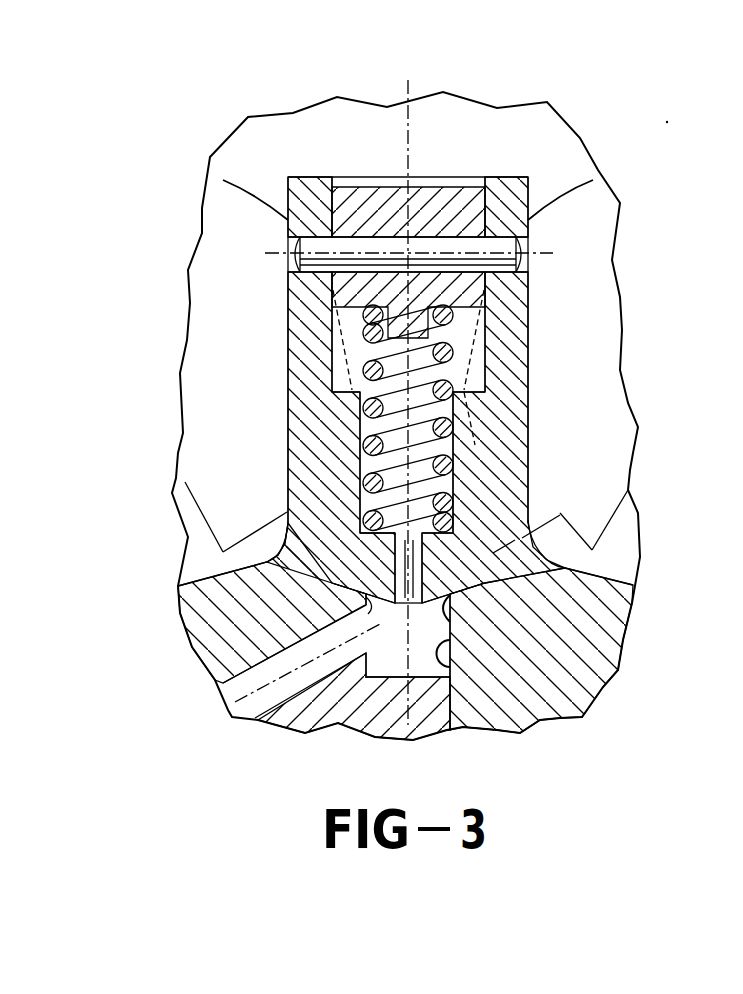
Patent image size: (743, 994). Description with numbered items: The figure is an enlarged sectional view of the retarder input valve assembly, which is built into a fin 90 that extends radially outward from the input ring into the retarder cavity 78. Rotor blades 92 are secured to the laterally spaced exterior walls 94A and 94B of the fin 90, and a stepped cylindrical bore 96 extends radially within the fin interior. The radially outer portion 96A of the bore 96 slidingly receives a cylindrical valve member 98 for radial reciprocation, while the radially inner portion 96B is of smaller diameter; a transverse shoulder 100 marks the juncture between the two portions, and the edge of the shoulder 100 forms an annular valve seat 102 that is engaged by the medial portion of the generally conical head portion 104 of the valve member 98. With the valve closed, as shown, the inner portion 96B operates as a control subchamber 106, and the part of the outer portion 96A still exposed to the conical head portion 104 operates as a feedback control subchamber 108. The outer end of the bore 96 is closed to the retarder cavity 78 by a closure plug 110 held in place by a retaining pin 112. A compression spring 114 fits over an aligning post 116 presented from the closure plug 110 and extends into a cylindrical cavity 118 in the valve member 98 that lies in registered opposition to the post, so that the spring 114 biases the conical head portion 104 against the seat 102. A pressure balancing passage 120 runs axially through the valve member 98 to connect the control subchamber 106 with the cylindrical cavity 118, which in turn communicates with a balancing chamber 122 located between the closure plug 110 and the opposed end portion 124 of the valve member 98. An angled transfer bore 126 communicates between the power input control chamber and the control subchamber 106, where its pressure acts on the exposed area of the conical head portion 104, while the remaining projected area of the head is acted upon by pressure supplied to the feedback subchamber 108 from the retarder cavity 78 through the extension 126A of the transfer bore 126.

The retarder cavity 78 is at (584, 226).
The fin 90 is at (532, 278).
The rotor blades 92 is at (232, 288).
The exterior wall 94A is at (312, 446).
The exterior wall 94B is at (512, 450).
The stepped cylindrical bore 96 is at (473, 200).
The radially outer portion of the stepped bore 96A is at (492, 350).
The radially inner portion of the stepped bore 96B is at (450, 667).
The valve member 98 is at (490, 496).
The transverse shoulder 100 is at (395, 603).
The annular valve seat 102 is at (450, 630).
The conical head portion 104 is at (366, 606).
The control subchamber 106 is at (390, 663).
The feedback control subchamber 108 is at (505, 596).
The closure plug 110 is at (360, 202).
The retaining pin 112 is at (318, 252).
The compression spring 114 is at (280, 418).
The aligning post 116 is at (430, 326).
The cylindrical cavity 118 is at (378, 467).
The pressure balancing passage 120 is at (392, 573).
The balancing chamber 122 is at (354, 351).
The opposed end portion of the valve member 124 is at (480, 390).
The transfer bore 126 is at (225, 697).
The extension of the transfer bore 126A is at (510, 555).